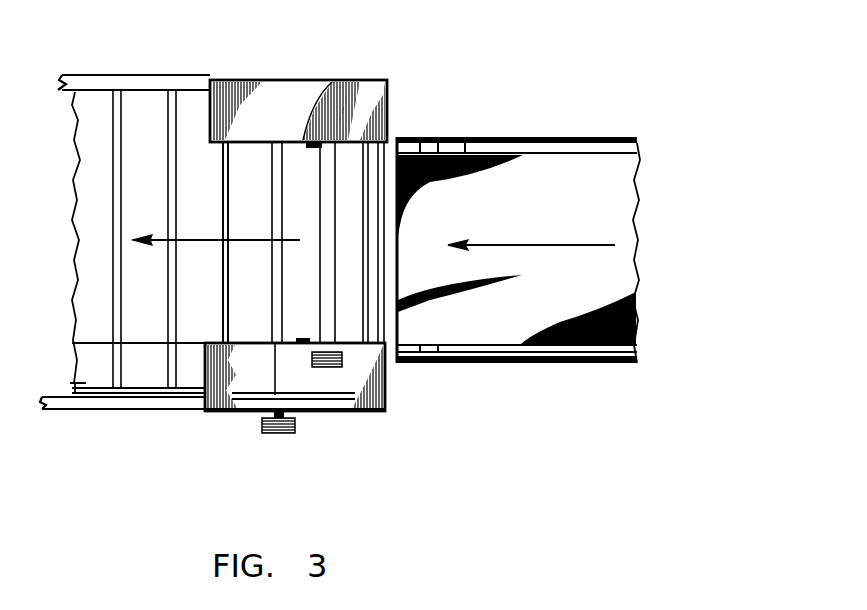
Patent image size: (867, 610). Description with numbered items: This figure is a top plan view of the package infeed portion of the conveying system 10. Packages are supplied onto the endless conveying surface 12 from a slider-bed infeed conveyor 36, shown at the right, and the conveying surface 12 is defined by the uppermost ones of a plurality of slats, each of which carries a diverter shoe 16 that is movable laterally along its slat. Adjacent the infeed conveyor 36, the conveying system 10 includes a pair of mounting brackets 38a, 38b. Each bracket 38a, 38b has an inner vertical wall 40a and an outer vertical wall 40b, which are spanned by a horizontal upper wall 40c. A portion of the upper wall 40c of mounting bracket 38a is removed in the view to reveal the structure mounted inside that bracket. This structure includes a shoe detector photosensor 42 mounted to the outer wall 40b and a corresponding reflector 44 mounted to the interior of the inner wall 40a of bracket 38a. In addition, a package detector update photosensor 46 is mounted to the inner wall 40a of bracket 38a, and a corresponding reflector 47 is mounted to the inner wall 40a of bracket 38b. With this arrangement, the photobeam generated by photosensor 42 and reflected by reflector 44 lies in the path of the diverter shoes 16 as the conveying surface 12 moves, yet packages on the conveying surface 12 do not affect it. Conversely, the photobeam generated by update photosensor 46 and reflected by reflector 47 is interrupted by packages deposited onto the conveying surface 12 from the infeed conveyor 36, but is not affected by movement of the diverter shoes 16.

The conveying system 10 is at (105, 408).
The endless conveying surface 12 is at (260, 226).
The diverter shoe 16 is at (250, 383).
The slider-bed infeed conveyor 36 is at (480, 188).
The mounting bracket 38a is at (222, 375).
The mounting bracket 38b is at (302, 100).
The inner vertical wall 40a is at (242, 148).
The outer vertical wall 40b is at (322, 95).
The horizontal upper wall 40c is at (287, 129).
The shoe detector photosensor 42 is at (285, 434).
The reflector 44 is at (302, 340).
The package detector update photosensor 46 is at (330, 372).
The reflector 47 is at (330, 150).